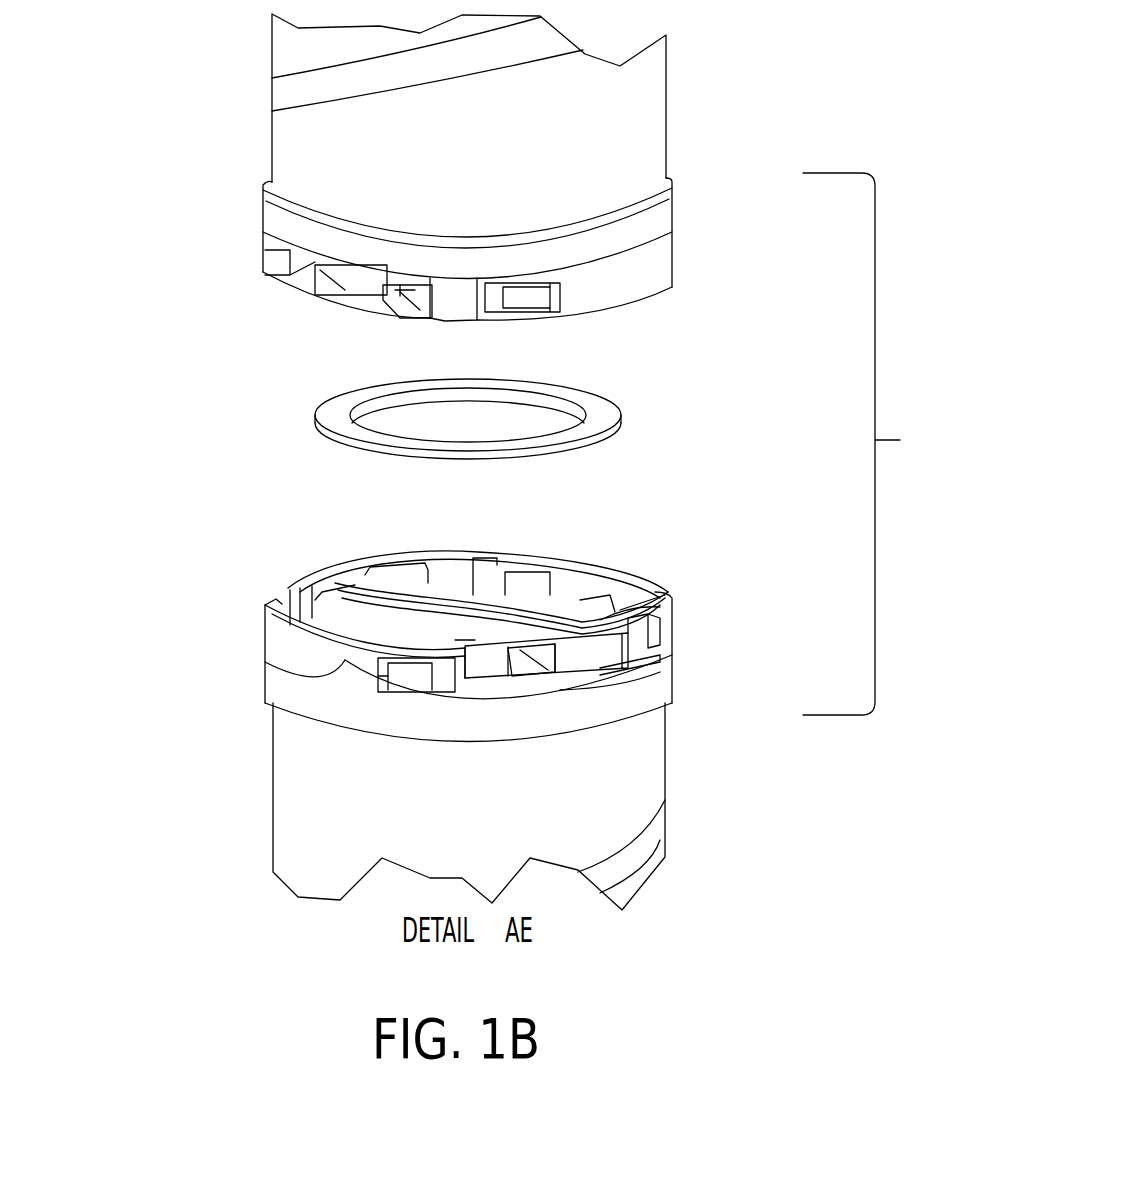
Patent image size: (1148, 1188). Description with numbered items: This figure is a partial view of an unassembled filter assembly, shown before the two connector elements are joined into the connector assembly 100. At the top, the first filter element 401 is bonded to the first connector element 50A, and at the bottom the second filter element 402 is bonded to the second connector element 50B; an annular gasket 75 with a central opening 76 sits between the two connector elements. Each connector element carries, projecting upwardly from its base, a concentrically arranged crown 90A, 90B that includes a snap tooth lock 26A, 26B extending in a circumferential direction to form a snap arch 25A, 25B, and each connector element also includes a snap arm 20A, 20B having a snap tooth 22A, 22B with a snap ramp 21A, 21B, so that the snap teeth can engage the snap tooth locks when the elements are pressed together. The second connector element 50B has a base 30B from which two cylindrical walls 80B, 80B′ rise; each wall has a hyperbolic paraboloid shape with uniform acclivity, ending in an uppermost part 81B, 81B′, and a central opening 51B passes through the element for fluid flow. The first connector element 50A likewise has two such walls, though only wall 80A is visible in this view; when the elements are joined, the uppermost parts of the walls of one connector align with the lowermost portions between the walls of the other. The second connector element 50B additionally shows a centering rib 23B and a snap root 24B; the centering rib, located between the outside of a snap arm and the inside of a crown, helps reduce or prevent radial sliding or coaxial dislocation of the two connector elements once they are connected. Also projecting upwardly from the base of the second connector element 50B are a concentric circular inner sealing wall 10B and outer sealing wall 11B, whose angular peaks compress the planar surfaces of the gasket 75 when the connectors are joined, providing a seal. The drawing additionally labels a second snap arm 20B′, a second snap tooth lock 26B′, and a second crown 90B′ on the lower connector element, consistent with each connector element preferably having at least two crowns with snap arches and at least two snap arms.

The first filter element 401 is at (627, 108).
The second filter element 402 is at (623, 798).
The connector assembly 100 is at (881, 444).
The first connector element 50A is at (245, 203).
The second connector element 50B is at (235, 648).
The snap arm 20A is at (345, 288).
The snap ramp 21A is at (402, 305).
The snap tooth 22A is at (400, 290).
The snap arch 25A is at (535, 320).
The snap tooth lock 26A is at (532, 293).
The wall 80A is at (440, 286).
The crown 90A is at (635, 298).
The annular gasket 75 is at (332, 418).
The central opening 76 is at (555, 413).
The inner sealing wall 10B is at (560, 600).
The outer sealing wall 11B is at (612, 612).
The snap arm 20B is at (590, 655).
The lower latch member (inner) 20B′ is at (345, 580).
The snap ramp 21B is at (528, 655).
The snap tooth 22B is at (560, 665).
The centering rib 23B is at (640, 655).
The snap root 24B is at (650, 640).
The snap arch 25B is at (390, 722).
The snap tooth lock 26B is at (390, 665).
The inner recess window 26B′ is at (530, 585).
The base 30B is at (620, 668).
The central opening 51B is at (465, 640).
The wall 80B is at (480, 673).
The wall 80B′ is at (335, 585).
The uppermost part 81B is at (595, 605).
The uppermost part 81B′ is at (370, 575).
The crown 90B is at (290, 678).
The inner skirt 90B′ is at (653, 590).